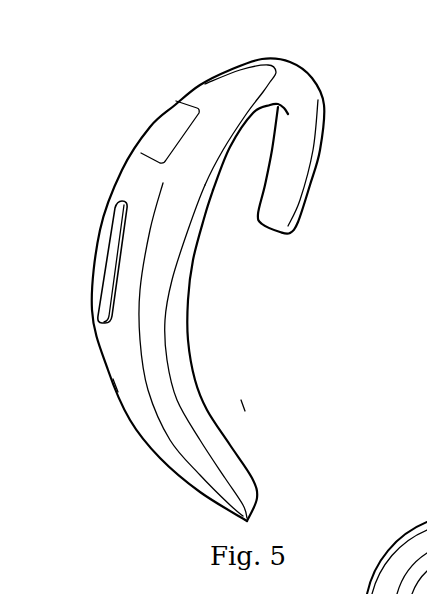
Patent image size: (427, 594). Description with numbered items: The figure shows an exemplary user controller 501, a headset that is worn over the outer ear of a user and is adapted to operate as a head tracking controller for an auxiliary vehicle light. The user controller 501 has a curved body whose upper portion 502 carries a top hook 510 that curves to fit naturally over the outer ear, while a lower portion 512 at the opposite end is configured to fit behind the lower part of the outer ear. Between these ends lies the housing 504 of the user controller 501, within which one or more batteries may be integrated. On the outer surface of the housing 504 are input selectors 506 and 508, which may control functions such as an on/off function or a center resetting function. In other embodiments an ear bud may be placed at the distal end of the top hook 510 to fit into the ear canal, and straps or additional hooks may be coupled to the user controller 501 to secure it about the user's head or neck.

The user controller 501 is at (148, 78).
The upper portion 502 is at (333, 152).
The housing 504 is at (107, 433).
The input selector 506 is at (118, 206).
The input selector 508 is at (98, 313).
The top hook 510 is at (270, 221).
The lower portion 512 is at (259, 500).